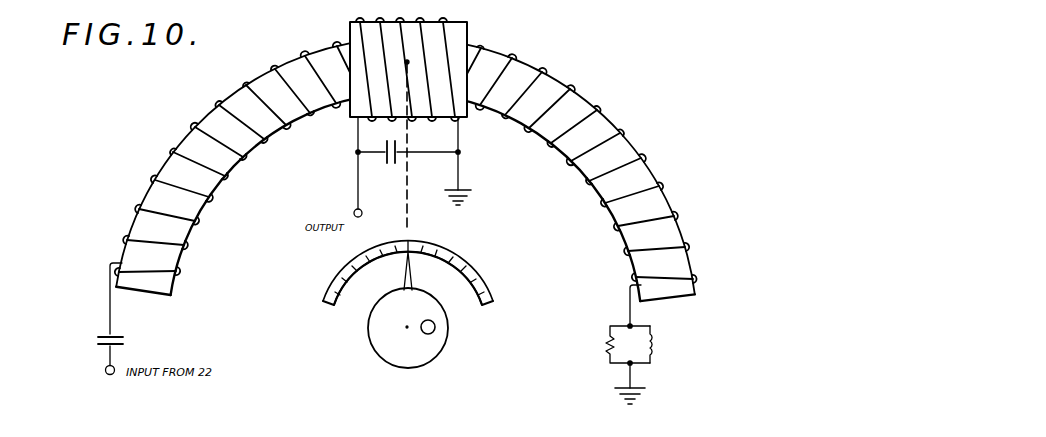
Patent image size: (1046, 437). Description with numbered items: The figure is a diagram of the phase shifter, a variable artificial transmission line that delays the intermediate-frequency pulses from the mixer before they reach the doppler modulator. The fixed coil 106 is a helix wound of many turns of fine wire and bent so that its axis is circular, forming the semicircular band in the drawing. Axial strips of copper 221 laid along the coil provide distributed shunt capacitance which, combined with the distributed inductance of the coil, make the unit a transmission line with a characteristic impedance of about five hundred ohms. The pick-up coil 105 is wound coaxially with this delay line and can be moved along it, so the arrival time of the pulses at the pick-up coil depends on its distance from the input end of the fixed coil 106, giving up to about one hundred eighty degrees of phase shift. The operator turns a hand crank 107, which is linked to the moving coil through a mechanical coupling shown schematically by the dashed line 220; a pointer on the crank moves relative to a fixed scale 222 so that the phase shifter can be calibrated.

The pick-up coil 105 is at (450, 20).
The fixed coil 106 is at (198, 222).
The hand crank 107 is at (418, 353).
The mechanical coupling 220 is at (409, 223).
The axial strips of copper 221 is at (597, 116).
The fixed scale 222 is at (487, 284).